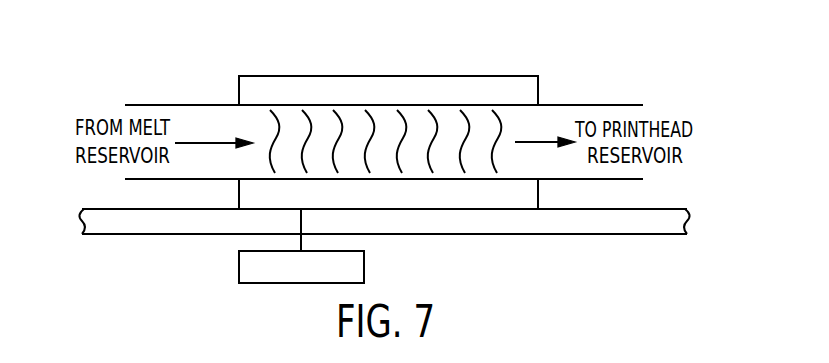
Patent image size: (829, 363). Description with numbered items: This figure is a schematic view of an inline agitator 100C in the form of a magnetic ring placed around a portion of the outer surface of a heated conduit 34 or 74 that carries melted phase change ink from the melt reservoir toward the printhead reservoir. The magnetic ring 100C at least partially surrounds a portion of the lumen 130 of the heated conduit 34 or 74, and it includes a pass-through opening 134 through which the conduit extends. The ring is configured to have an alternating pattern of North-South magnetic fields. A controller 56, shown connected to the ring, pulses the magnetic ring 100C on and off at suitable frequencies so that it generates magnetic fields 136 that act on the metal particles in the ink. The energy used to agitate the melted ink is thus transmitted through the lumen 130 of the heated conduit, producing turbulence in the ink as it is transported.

The heated conduit 34 is at (384, 116).
The conduit 74 is at (157, 104).
The agitator 100C is at (252, 76).
The lumen 130 is at (290, 103).
The pass-through opening 134 is at (411, 104).
The magnetic fields 136 is at (498, 115).
The controller 56 is at (364, 264).